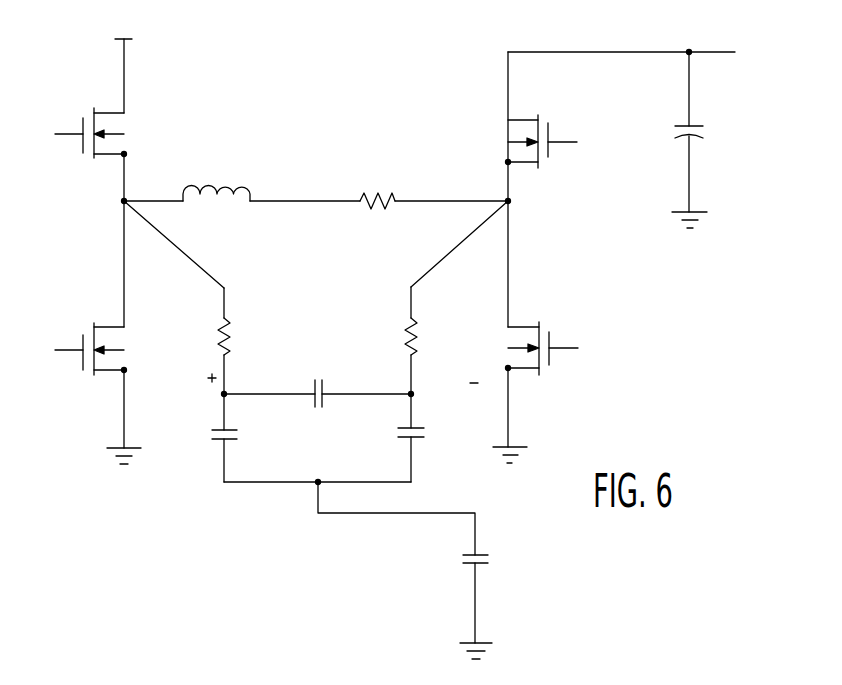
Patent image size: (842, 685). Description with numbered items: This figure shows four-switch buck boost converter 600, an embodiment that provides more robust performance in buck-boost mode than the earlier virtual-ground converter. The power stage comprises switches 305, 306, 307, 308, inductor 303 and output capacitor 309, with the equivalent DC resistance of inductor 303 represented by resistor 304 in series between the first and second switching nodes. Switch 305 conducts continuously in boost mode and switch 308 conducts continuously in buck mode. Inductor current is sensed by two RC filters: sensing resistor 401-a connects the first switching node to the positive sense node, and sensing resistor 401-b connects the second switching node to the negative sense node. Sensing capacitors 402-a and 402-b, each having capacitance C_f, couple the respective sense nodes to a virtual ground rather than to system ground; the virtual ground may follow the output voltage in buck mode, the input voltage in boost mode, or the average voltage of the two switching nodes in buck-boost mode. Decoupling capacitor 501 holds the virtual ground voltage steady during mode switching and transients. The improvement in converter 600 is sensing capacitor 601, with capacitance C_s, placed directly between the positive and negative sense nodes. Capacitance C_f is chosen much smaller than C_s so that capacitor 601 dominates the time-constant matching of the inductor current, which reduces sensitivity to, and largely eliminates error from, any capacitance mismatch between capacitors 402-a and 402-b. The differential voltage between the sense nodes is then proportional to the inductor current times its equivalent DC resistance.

The four-switch buck boost converter 600 is at (338, 43).
The switch 305 is at (88, 105).
The switch 306 is at (83, 380).
The switch 307 is at (548, 320).
The switch 308 is at (548, 112).
The inductor 303 is at (237, 180).
The DCR resistor 304 is at (393, 197).
The output capacitor 309 is at (708, 134).
The sensing resistor 401-a is at (218, 318).
The sensing resistor 401-b is at (427, 313).
The sensing capacitor 402-a is at (213, 445).
The sensing capacitor 402-b is at (420, 447).
The sensing capacitor 601 is at (316, 375).
The decoupling capacitor 501 is at (455, 558).